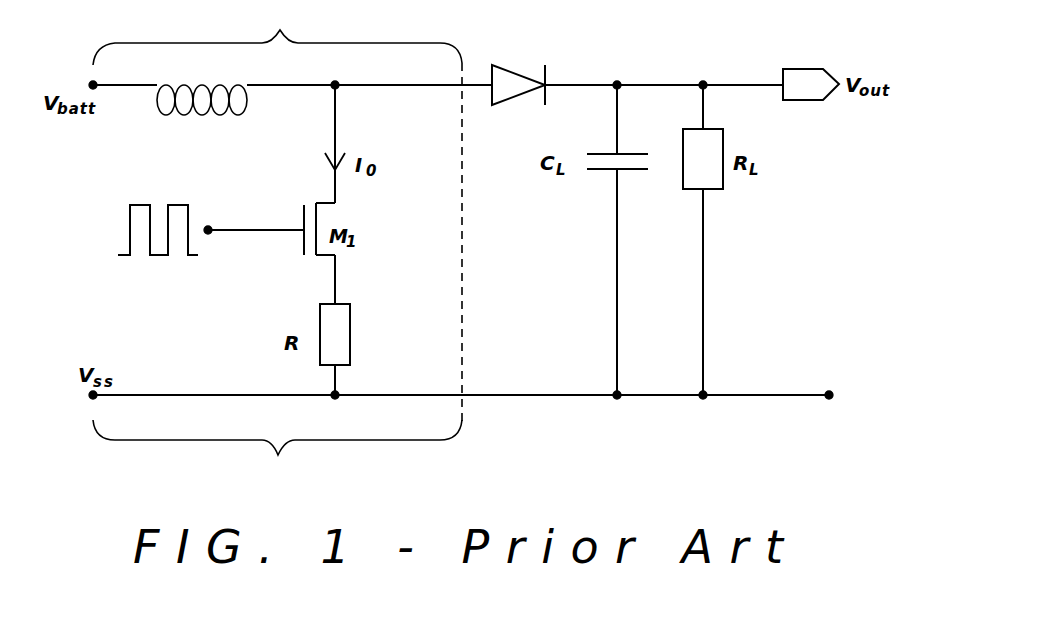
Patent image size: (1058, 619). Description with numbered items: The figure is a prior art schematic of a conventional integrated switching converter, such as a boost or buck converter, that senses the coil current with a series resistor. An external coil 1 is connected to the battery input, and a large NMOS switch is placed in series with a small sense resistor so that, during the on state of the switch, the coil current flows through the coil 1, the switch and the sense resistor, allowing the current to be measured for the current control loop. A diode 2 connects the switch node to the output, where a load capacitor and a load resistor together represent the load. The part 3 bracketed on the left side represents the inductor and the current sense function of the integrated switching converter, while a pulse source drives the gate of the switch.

The external coil 1 is at (222, 113).
The diode 2 is at (527, 72).
The part representing the inductor and current sense function 3 is at (277, 248).